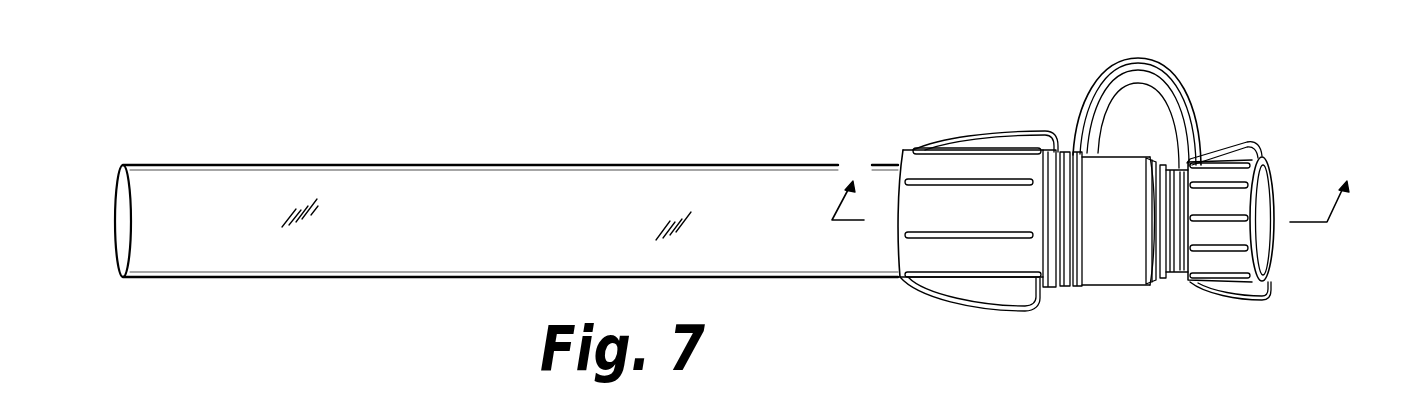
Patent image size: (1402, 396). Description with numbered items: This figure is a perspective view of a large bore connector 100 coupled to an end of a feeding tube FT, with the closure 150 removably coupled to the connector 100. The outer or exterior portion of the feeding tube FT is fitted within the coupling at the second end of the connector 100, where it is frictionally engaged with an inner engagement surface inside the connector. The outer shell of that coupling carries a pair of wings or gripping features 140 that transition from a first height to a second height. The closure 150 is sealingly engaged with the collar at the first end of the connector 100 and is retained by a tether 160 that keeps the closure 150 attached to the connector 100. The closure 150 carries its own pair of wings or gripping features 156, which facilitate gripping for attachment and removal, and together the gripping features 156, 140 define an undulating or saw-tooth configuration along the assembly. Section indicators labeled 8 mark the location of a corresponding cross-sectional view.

The connector 100 is at (1062, 48).
The gripping features 140 is at (1005, 146).
The closure 150 is at (1273, 143).
The gripping features 156 is at (1245, 290).
The tether 160 is at (1147, 63).
The section line indicator 8 is at (1094, 184).
The feeding tube FT is at (492, 190).